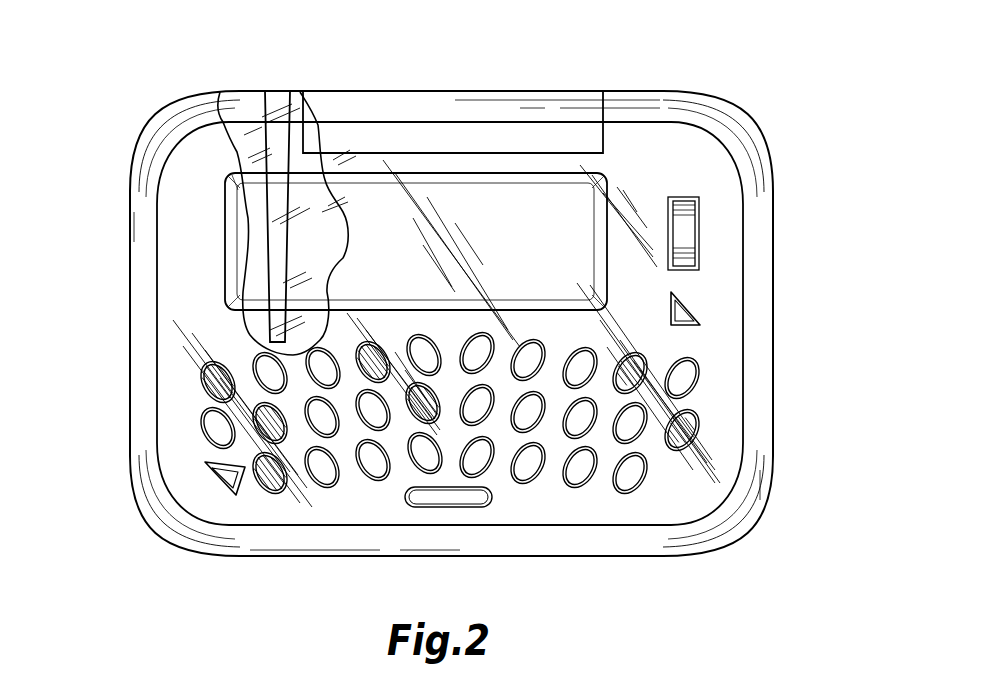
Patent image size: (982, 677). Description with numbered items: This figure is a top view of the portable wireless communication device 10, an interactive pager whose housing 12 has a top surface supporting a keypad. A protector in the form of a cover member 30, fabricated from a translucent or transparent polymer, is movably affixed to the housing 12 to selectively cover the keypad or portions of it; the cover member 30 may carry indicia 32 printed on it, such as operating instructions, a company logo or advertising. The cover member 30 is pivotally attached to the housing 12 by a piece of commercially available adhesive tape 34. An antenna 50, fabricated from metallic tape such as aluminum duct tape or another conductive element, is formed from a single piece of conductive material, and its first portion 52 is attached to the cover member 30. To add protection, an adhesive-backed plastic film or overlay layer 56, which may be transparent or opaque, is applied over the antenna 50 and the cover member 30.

The portable wireless communication device 10 is at (784, 342).
The housing 12 is at (752, 158).
The cover member 30 is at (670, 508).
The indicia 32 is at (543, 524).
The adhesive tape 34 is at (568, 103).
The antenna 50 is at (264, 273).
The first portion 52 is at (262, 198).
The overlay layer 56 is at (322, 205).